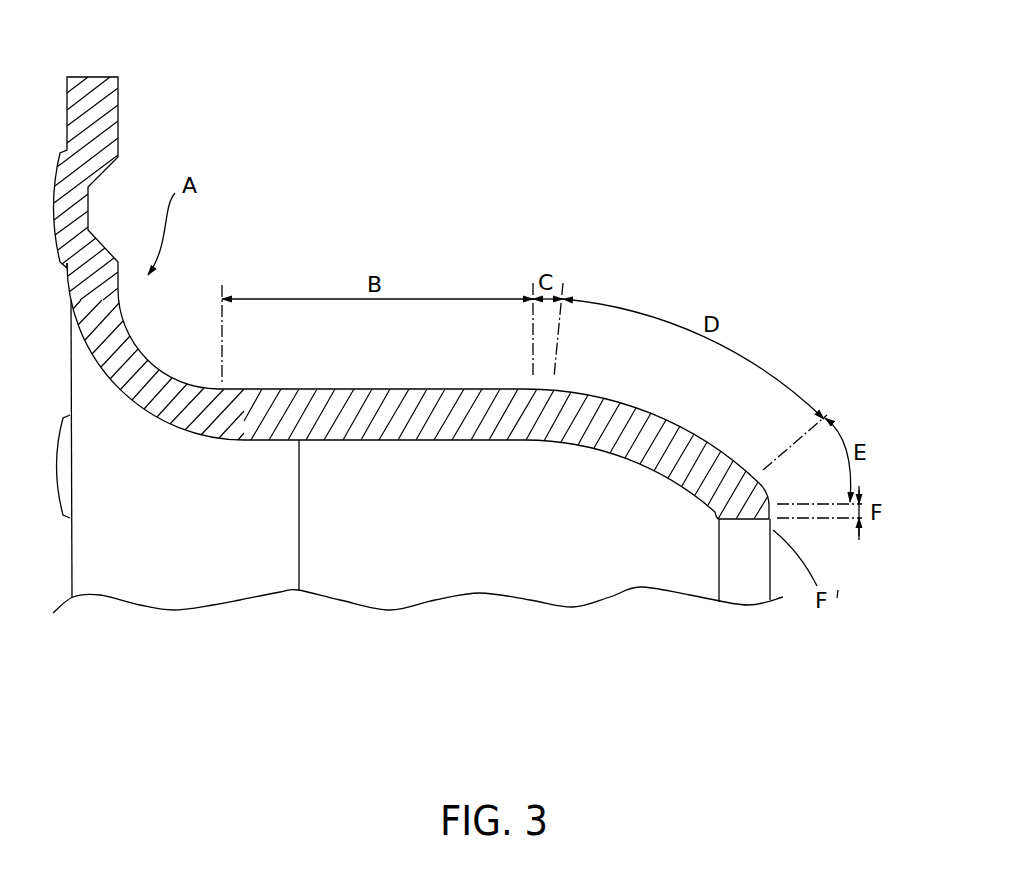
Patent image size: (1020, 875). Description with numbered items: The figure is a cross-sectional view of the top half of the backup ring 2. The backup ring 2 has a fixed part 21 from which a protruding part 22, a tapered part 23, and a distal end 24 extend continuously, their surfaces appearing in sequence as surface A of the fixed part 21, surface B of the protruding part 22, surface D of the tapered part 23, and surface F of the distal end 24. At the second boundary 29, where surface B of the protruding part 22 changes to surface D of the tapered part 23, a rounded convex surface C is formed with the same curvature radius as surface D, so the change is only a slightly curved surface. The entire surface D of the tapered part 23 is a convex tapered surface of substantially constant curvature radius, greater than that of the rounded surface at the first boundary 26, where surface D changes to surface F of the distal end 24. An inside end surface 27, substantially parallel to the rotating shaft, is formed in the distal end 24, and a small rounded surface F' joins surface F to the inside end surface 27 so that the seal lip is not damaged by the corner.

The backup ring 2 is at (425, 175).
The fixed part 21 is at (128, 381).
The protruding part 22 is at (335, 442).
The second boundary 29 is at (537, 408).
The tapered part 23 is at (616, 452).
The first boundary 26 is at (715, 509).
The distal end 24 is at (743, 521).
The inside end surface 27 is at (764, 522).